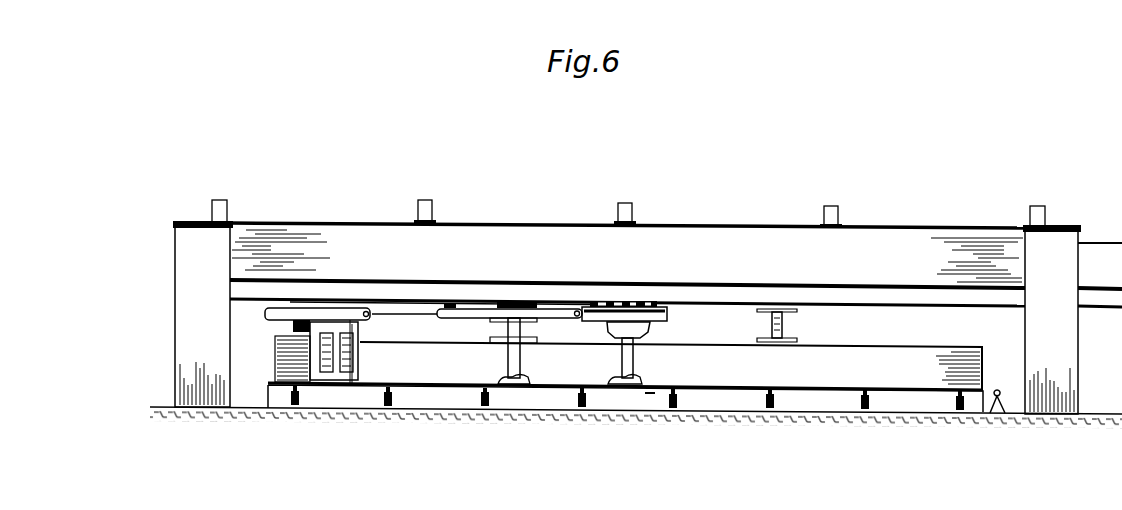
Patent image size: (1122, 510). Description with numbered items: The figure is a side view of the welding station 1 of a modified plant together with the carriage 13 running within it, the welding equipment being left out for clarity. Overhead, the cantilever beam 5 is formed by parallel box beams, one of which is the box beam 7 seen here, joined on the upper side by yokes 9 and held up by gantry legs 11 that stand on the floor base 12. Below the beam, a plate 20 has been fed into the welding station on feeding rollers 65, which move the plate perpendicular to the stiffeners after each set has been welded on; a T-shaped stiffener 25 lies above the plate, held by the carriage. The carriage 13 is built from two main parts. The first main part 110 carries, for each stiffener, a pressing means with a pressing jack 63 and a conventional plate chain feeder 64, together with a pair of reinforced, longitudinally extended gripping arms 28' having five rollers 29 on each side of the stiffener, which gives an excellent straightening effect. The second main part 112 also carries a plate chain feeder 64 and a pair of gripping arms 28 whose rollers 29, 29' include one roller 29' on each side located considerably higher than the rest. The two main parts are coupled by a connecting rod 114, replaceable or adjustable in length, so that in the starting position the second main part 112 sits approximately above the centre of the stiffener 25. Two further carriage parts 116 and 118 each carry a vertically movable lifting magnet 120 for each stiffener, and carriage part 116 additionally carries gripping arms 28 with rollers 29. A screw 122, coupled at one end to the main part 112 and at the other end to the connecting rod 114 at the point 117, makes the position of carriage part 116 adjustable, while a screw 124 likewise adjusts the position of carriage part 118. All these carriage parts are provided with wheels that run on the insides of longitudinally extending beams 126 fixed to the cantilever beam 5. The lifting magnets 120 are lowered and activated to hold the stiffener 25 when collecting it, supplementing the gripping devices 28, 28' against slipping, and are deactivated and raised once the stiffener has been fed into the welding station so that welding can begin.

The welding station 1 is at (488, 194).
The cantilever beam 5 is at (628, 233).
The box beam 7 is at (912, 233).
The yoke 9 is at (632, 213).
The gantry leg 11 is at (1065, 360).
The base 12 is at (828, 399).
The carriage 13 is at (258, 329).
The plate 20 is at (650, 393).
The stiffener 25 is at (870, 353).
The gripping arm pair 28 is at (553, 348).
The reinforced gripping arm pair 28' is at (625, 356).
The roller 29 is at (468, 385).
The upper roller 29' is at (661, 363).
The pressing jack 63 is at (292, 331).
The plate chain feeder 64 is at (293, 332).
The feeding roller 65 is at (778, 401).
The first main carriage part 110 is at (350, 308).
The second main carriage part 112 is at (640, 307).
The connecting rod 114 is at (410, 314).
The carriage part 116 is at (518, 302).
The coupling point 117 is at (449, 302).
The carriage part 118 is at (770, 308).
The lifting magnet 120 is at (495, 340).
The screw 122 is at (572, 309).
The screw 124 is at (695, 313).
The longitudinal beam 126 is at (973, 298).